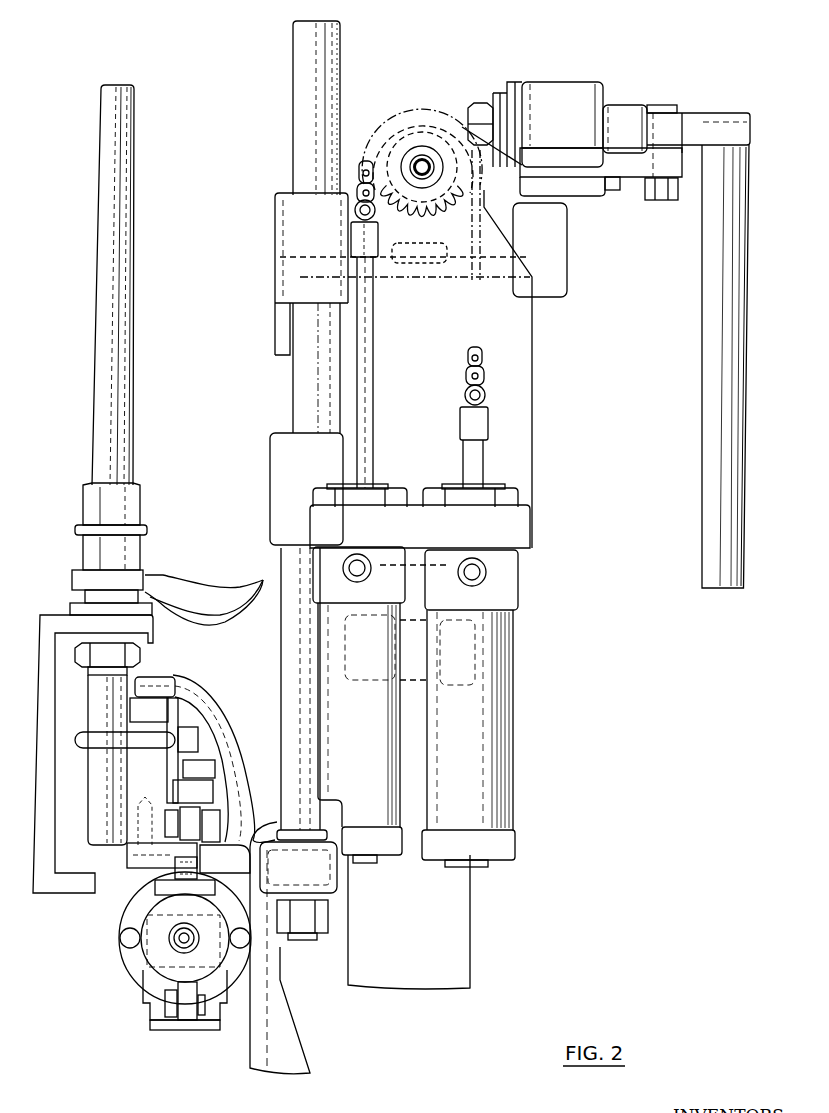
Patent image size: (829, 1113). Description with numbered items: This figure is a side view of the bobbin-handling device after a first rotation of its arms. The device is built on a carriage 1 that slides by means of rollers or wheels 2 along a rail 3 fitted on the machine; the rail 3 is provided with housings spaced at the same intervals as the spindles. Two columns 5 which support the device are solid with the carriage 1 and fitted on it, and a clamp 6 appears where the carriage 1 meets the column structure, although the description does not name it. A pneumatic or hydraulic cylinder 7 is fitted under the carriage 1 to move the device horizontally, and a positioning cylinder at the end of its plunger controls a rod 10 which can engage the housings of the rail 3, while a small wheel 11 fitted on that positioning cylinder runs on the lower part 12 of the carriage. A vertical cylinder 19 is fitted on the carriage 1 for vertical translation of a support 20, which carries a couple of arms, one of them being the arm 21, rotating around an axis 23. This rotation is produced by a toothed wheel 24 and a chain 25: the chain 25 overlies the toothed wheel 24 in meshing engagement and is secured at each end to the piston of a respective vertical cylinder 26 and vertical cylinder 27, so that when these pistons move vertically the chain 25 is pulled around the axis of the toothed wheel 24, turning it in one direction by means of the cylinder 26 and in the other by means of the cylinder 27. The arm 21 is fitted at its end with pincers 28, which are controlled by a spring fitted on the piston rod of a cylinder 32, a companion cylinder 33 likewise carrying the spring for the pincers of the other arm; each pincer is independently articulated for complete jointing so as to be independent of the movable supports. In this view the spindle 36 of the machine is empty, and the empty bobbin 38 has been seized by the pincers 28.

The carriage 1 is at (240, 778).
The rollers or wheels 2 is at (195, 830).
The rail 3 is at (228, 858).
The columns 5 is at (305, 50).
The clamp bracket with nut 6 is at (285, 870).
The pneumatic or hydraulic cylinder 7 is at (172, 955).
The rod 10 is at (185, 862).
The small wheel 11 is at (188, 1000).
The lower part of the carriage 12 is at (163, 1030).
The vertical cylinder 19 is at (450, 945).
The support 20 is at (275, 488).
The arm 21 is at (625, 165).
The axis 23 is at (431, 158).
The toothed wheel 24 is at (405, 130).
The chain 25 is at (366, 161).
The vertical cylinder 26 is at (375, 705).
The vertical cylinder 27 is at (486, 801).
The pincers 28 is at (685, 120).
The cylinder 32 is at (536, 115).
The cylinder 33 is at (583, 110).
The spindle 36 is at (128, 245).
The empty bobbin 38 is at (712, 524).